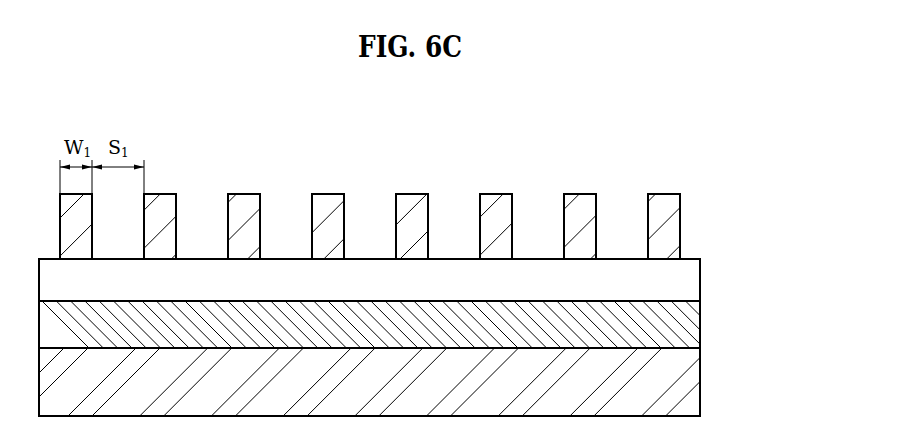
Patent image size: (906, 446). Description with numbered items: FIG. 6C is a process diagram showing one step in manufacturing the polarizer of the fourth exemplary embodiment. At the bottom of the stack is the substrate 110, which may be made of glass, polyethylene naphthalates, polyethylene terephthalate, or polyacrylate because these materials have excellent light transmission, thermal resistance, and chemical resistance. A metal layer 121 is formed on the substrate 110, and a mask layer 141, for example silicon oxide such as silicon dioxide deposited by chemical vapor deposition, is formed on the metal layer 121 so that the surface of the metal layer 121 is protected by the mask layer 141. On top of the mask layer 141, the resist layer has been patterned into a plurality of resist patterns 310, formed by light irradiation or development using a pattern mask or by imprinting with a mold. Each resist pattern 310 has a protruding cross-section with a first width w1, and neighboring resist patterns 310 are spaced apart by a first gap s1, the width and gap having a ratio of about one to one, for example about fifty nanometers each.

The resist pattern 310 is at (413, 222).
The mask layer 141 is at (683, 283).
The metal layer 121 is at (683, 323).
The substrate 110 is at (682, 378).